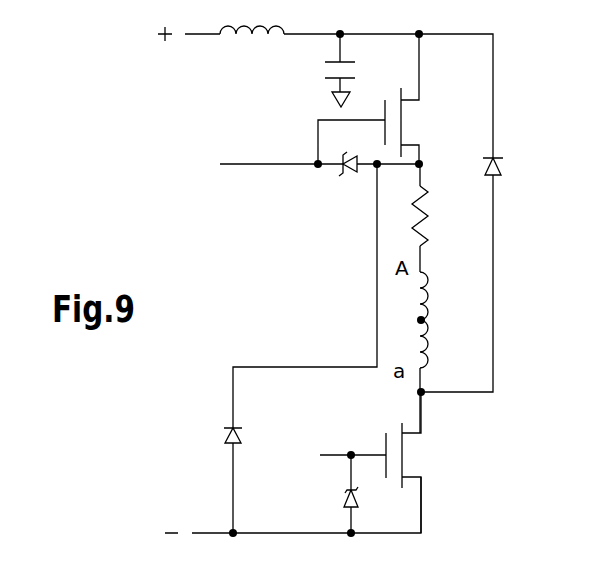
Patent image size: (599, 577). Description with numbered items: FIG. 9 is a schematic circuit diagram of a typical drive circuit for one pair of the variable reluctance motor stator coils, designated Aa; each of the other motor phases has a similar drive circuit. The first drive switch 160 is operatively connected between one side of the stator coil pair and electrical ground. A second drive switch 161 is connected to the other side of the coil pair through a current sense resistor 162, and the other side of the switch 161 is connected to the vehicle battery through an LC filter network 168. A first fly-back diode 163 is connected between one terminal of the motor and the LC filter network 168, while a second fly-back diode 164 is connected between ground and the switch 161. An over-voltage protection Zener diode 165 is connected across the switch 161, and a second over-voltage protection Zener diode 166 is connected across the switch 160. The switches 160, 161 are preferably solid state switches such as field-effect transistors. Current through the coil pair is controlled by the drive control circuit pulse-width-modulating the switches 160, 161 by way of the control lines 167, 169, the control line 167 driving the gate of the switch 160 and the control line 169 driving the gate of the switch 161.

The first drive switch 160 is at (422, 450).
The second drive switch 161 is at (411, 117).
The current sense resistor 162 is at (428, 214).
The first fly-back diode 163 is at (504, 171).
The second fly-back diode 164 is at (225, 437).
The over-voltage protection Zener diode 165 is at (357, 174).
The over-voltage protection Zener diode 166 is at (340, 494).
The control line 167 is at (328, 452).
The LC filter network 168 is at (268, 66).
The control line 169 is at (252, 166).